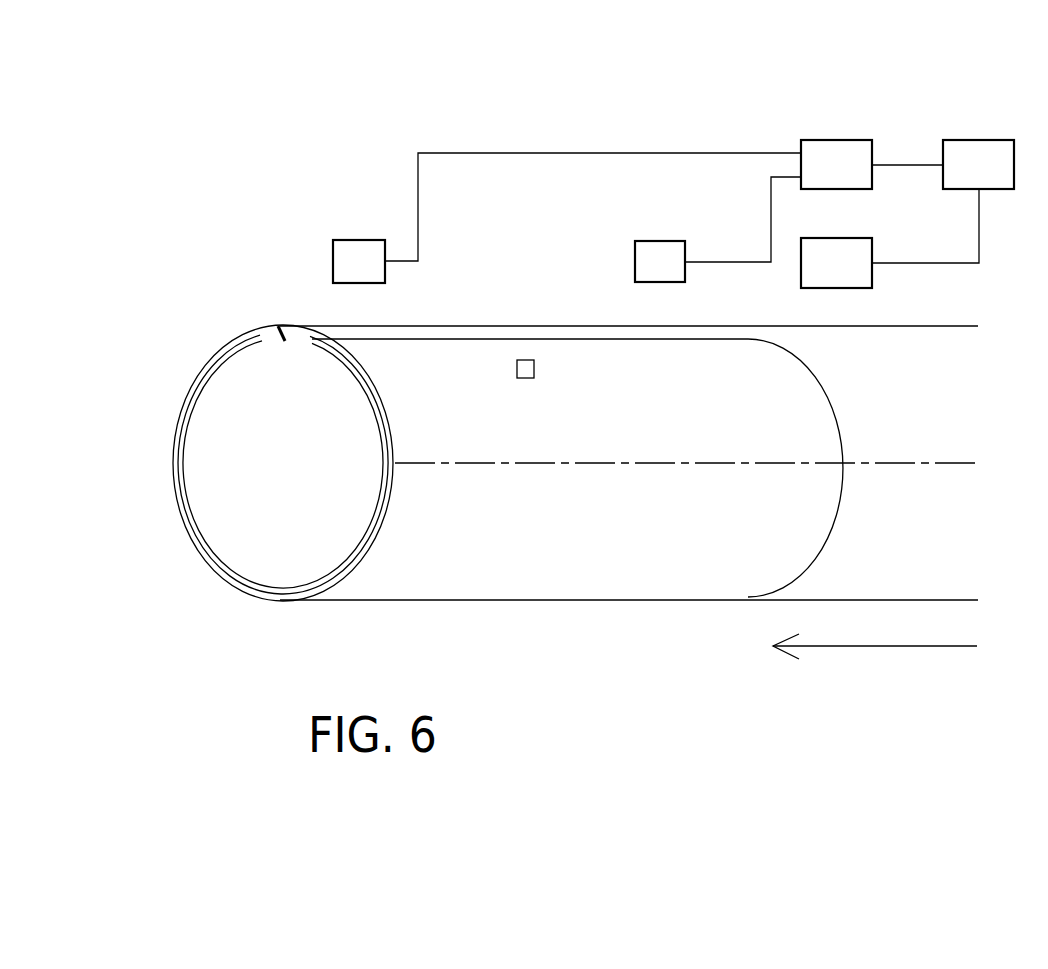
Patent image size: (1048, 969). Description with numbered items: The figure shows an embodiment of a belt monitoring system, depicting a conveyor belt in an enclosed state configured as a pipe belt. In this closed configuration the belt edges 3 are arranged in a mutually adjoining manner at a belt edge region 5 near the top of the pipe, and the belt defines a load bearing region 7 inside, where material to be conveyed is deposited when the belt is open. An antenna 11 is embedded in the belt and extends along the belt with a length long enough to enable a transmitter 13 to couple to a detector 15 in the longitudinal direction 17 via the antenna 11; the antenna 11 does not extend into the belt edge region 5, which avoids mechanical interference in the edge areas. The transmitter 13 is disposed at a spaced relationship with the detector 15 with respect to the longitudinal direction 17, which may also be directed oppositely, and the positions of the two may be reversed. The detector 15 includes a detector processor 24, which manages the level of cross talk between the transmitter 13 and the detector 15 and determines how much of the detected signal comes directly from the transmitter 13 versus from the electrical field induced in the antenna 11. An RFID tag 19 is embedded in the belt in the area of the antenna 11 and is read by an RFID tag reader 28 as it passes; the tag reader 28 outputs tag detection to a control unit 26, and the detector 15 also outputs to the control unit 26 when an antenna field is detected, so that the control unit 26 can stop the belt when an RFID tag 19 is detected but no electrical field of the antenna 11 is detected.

The belt edge 3 is at (263, 325).
The belt edge region 5 is at (283, 306).
The load bearing region 7 is at (281, 574).
The antenna 11 is at (460, 339).
The transmitter 13 is at (361, 240).
The detector 15 is at (662, 236).
The longitudinal direction 17 is at (905, 646).
The RFID tag 19 is at (527, 360).
The detector processor 24 is at (843, 140).
The control unit 26 is at (987, 140).
The RFID tag reader 28 is at (872, 277).